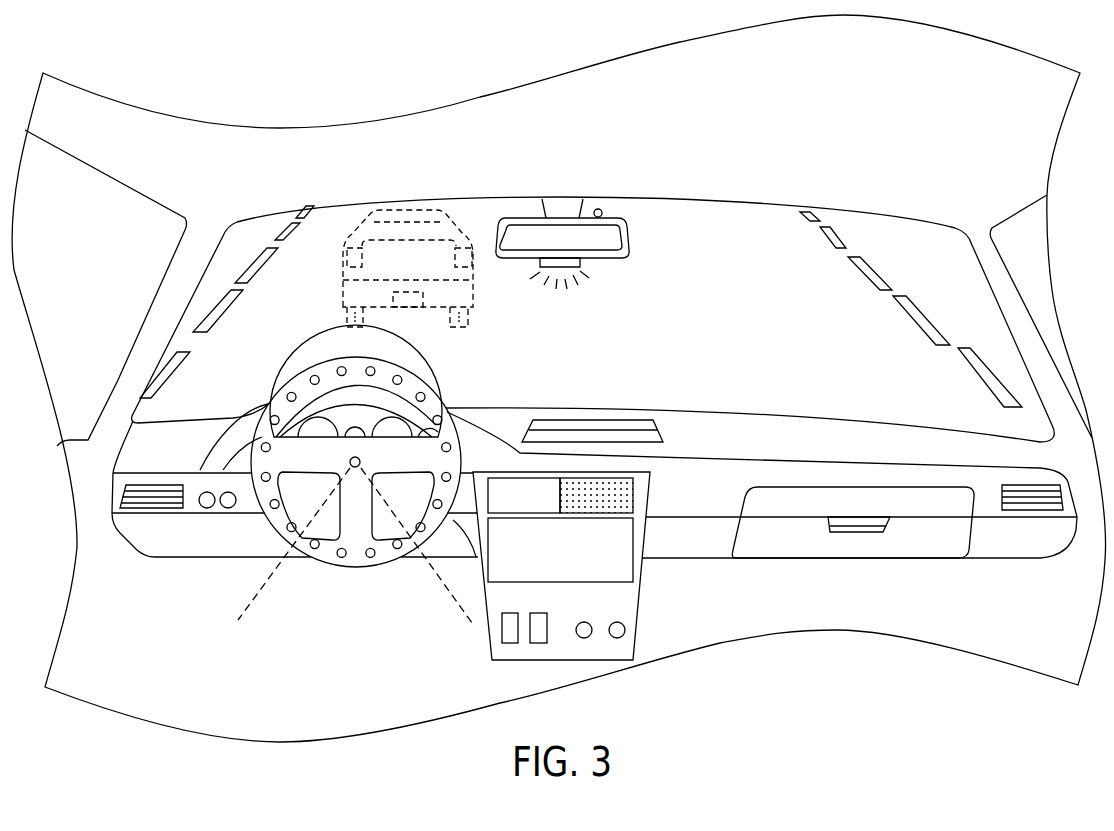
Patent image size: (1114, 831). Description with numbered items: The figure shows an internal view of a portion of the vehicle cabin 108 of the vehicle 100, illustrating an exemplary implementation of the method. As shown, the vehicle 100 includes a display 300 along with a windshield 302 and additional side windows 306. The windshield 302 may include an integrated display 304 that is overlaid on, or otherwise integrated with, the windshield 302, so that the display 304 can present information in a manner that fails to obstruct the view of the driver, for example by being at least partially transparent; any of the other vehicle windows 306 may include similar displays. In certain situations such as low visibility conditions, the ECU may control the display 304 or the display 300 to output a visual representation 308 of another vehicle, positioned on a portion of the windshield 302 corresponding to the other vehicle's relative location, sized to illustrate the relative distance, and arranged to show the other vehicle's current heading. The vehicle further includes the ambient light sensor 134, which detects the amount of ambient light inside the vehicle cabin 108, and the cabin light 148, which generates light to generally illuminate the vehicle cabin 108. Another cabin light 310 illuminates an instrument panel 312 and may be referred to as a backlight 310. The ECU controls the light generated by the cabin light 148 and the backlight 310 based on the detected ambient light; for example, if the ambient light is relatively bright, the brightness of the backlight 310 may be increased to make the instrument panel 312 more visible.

The vehicle 100 is at (135, 82).
The side windows 306 is at (128, 215).
The windshield 302 is at (685, 220).
The integrated display 304 is at (775, 205).
The visual representation 308 is at (437, 199).
The ambient light sensor 134 is at (599, 209).
The cabin light 148 is at (585, 263).
The display 300 is at (617, 562).
The cabin light 310 is at (388, 410).
The instrument panel 312 is at (410, 415).
The vehicle cabin 108 is at (362, 645).